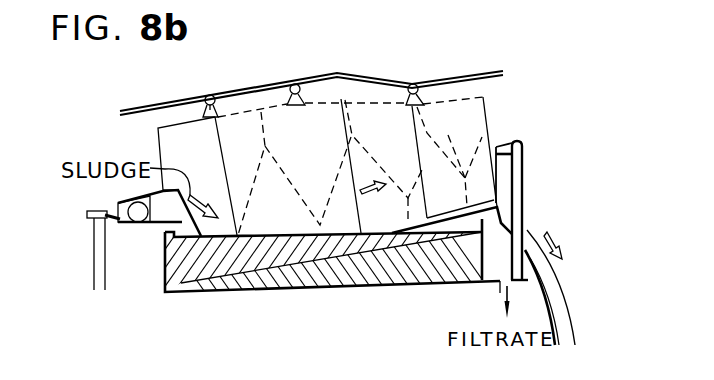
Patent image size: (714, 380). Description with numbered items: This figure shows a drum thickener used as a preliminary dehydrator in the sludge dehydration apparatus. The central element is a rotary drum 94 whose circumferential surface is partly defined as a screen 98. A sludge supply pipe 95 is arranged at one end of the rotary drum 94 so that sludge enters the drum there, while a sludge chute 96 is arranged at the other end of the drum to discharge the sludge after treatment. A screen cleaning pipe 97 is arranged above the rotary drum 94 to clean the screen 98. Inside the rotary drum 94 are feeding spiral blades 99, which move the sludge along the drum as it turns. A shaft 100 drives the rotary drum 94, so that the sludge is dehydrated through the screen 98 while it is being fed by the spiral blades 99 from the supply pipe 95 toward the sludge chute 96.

The rotary drum 94 is at (484, 109).
The sludge supply pipe 95 is at (131, 224).
The sludge chute 96 is at (573, 300).
The screen cleaning pipe 97 is at (471, 70).
The screen 98 is at (378, 100).
The feeding spiral blades 99 is at (449, 156).
The shaft 100 is at (524, 179).